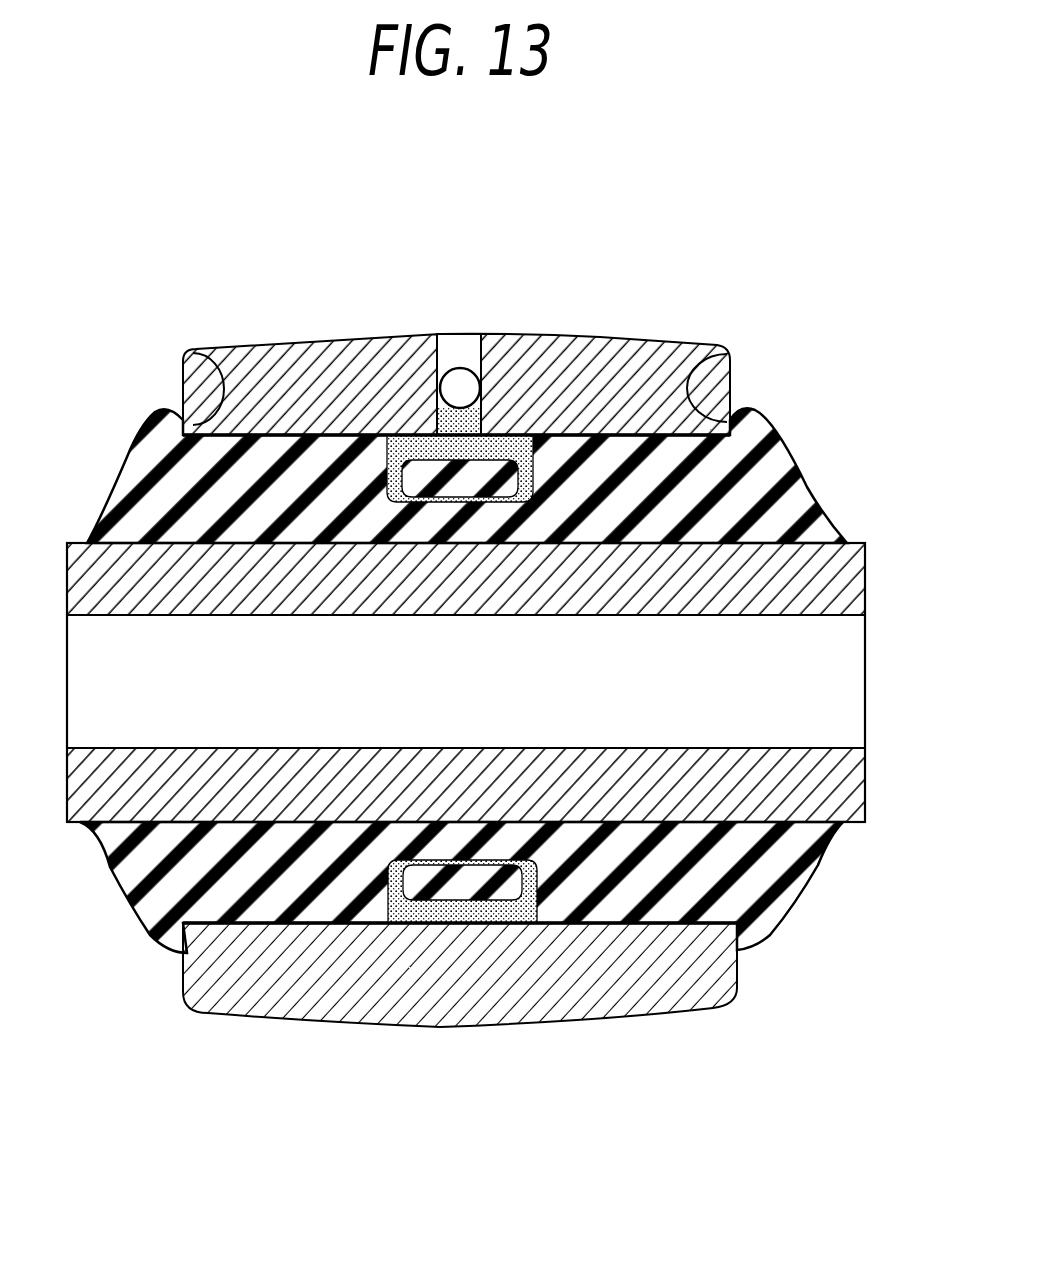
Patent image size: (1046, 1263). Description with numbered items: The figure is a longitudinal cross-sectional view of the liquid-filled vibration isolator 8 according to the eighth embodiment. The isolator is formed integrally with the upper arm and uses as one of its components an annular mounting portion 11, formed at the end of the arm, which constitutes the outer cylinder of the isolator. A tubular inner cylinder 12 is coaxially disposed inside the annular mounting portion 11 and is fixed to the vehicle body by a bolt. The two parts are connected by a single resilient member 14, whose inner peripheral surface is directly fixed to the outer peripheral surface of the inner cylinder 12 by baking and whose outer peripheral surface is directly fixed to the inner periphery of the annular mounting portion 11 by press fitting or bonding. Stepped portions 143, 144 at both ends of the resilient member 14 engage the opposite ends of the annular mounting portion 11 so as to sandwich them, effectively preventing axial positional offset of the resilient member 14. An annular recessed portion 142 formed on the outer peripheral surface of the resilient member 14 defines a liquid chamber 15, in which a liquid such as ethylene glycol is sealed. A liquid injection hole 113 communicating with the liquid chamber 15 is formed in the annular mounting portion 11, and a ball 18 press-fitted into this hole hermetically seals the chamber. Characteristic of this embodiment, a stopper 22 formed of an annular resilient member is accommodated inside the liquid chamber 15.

The liquid-filled vibration isolator 8 is at (720, 337).
The annular mounting portion 11 is at (337, 333).
The inner cylinder 12 is at (527, 614).
The resilient member 14 is at (823, 487).
The liquid chamber 15 is at (498, 913).
The ball 18 is at (458, 393).
The stopper 22 is at (467, 883).
The liquid injection hole 113 is at (458, 380).
The annular recessed portion 142 is at (398, 492).
The stepped portion 143 is at (193, 353).
The stepped portion 144 is at (690, 380).